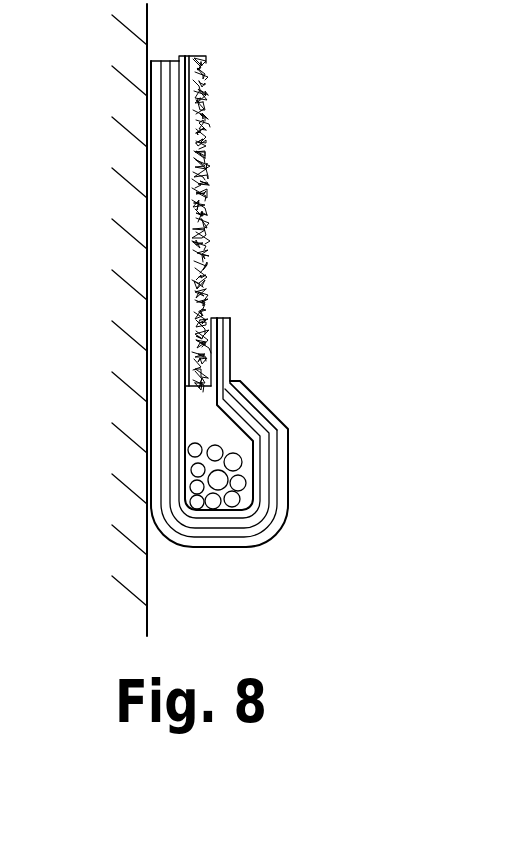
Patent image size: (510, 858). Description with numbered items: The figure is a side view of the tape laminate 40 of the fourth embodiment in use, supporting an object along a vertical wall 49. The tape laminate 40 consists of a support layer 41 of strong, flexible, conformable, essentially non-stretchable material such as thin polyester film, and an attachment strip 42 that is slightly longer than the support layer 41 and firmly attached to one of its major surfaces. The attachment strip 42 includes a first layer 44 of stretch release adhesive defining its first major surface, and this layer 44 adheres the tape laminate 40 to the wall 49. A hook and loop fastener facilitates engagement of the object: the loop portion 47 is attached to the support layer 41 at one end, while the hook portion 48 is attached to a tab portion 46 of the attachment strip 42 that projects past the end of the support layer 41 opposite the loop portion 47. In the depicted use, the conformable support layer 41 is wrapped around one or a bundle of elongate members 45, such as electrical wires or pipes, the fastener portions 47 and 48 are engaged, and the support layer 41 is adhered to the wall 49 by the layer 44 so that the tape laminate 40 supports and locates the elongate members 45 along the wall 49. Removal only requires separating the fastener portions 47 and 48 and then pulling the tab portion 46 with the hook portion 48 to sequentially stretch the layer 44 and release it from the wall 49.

The tape laminate 40 is at (210, 94).
The support layer 41 is at (185, 193).
The attachment strip 42 is at (163, 143).
The first layer of stretch release adhesive 44 is at (160, 291).
The elongate members 45 is at (216, 485).
The tab portion 46 is at (227, 362).
The loop portion 47 is at (204, 224).
The hook portion 48 is at (215, 335).
The wall 49 is at (149, 585).